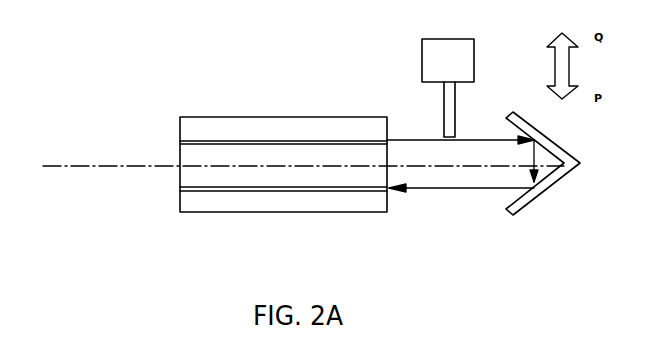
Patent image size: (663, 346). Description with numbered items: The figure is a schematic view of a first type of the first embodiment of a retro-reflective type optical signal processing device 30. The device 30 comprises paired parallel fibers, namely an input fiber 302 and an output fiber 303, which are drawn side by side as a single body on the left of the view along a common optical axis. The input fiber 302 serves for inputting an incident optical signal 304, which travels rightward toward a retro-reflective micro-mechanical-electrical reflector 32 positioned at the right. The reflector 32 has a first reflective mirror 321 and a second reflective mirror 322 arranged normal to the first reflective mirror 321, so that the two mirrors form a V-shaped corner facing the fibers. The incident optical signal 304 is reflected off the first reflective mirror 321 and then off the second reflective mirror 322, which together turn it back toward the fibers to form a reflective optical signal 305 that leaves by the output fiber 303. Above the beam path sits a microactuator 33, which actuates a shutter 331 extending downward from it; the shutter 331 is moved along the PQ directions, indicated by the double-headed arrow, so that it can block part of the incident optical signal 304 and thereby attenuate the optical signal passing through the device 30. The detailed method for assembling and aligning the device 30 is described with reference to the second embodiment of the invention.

The retro-reflective type optical signal processing device 30 is at (213, 72).
The input fiber 302 is at (267, 140).
The output fiber 303 is at (224, 193).
The incident optical signal 304 is at (412, 135).
The reflective optical signal 305 is at (421, 194).
The retro-reflective micro-mechanical-electrical reflector 32 is at (541, 168).
The first reflective mirror 321 is at (512, 127).
The second reflective mirror 322 is at (507, 203).
The microactuator 33 is at (422, 55).
The shutter 331 is at (444, 100).